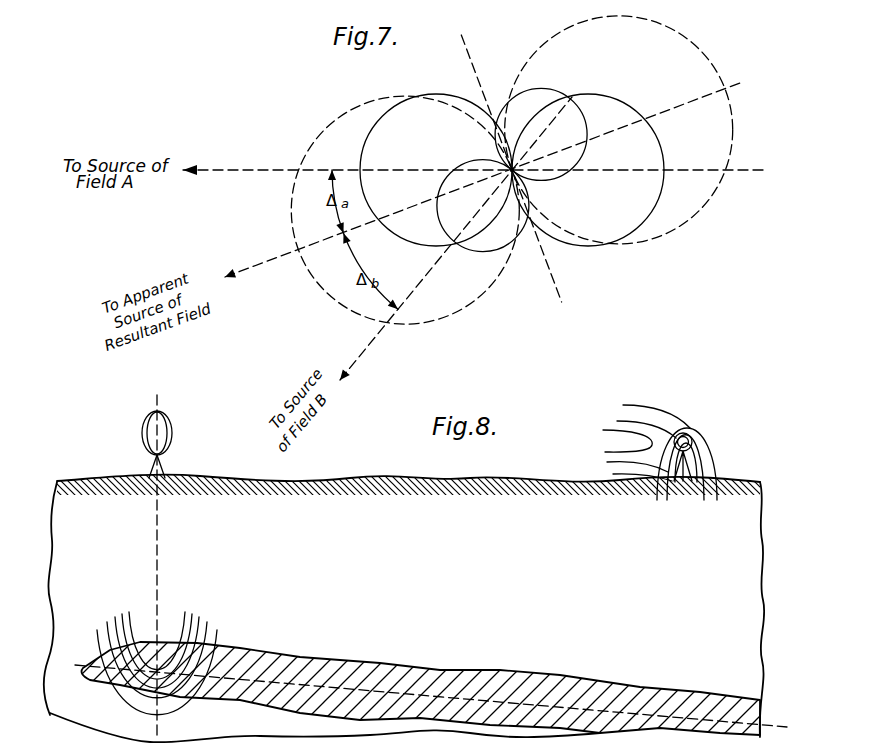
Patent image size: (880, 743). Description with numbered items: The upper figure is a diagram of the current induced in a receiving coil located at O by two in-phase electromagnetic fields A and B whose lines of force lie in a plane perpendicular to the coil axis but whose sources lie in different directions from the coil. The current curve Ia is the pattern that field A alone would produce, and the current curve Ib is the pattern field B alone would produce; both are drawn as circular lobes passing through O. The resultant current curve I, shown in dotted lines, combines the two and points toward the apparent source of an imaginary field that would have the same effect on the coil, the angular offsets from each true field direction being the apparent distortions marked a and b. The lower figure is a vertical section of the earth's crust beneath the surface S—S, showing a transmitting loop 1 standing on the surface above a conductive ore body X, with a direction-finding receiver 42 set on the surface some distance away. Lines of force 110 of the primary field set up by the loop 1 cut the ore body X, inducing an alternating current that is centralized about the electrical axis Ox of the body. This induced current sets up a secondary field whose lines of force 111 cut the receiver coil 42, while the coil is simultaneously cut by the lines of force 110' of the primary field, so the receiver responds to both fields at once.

In FIG. 7, the current curve of field A Ia is at (620, 104).
In FIG. 7, the current curve of field B Ib is at (540, 87).
In FIG. 7, the resultant current curve I is at (649, 242).
In FIG. 7, the coil position O is at (527, 144).
In FIG. 8, the transmitting loop 1 is at (173, 425).
In FIG. 8, the surface of the earth S is at (410, 484).
In FIG. 8, the ore body X is at (335, 657).
In FIG. 8, the electrical axis of the conductive body Ox is at (467, 700).
In FIG. 8, the lines of force of the primary field cutting the ore body 110 is at (177, 655).
In FIG. 8, the lines of force of the primary field cutting the coil 110' is at (654, 429).
In FIG. 8, the direction-finding receiver 42 is at (690, 432).
In FIG. 8, the lines of force of the secondary field 111 is at (713, 457).